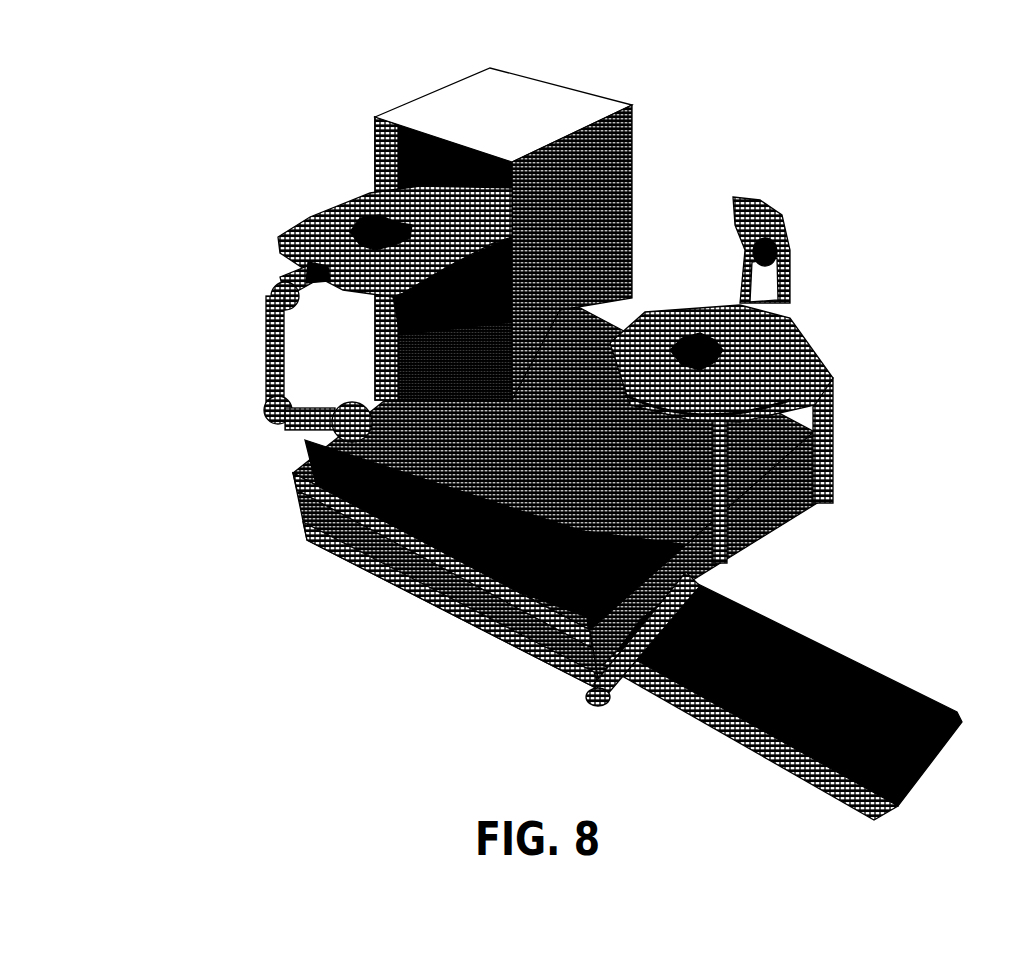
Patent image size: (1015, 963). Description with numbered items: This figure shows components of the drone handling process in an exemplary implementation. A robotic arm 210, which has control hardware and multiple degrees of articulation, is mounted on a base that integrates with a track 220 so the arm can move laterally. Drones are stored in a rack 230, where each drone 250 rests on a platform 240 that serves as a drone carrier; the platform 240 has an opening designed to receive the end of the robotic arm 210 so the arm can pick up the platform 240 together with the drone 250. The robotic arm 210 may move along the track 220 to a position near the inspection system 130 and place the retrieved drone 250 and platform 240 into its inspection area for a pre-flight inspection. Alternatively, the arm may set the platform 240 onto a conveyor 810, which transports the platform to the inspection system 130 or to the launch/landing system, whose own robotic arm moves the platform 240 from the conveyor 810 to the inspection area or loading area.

The inspection system 130 is at (820, 250).
The robotic arm 210 is at (272, 368).
The track 220 is at (427, 507).
The rack 230 is at (447, 90).
The platform 240 is at (290, 229).
The drone 250 is at (367, 213).
The conveyor 810 is at (853, 663).